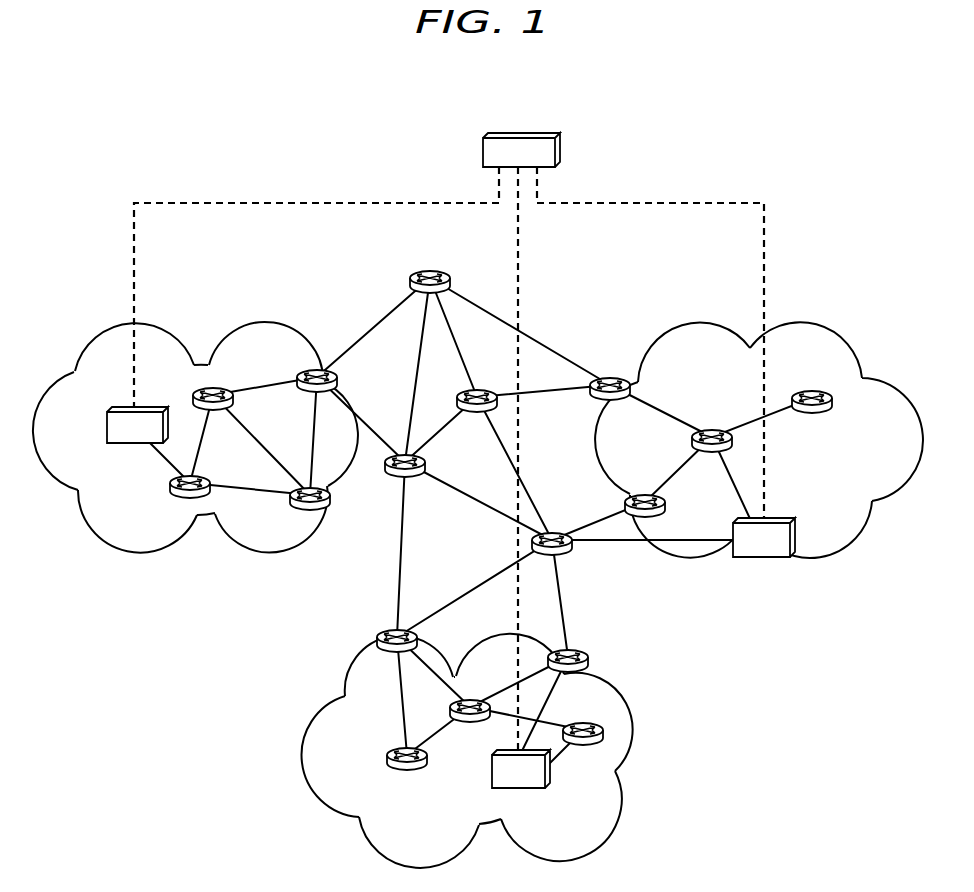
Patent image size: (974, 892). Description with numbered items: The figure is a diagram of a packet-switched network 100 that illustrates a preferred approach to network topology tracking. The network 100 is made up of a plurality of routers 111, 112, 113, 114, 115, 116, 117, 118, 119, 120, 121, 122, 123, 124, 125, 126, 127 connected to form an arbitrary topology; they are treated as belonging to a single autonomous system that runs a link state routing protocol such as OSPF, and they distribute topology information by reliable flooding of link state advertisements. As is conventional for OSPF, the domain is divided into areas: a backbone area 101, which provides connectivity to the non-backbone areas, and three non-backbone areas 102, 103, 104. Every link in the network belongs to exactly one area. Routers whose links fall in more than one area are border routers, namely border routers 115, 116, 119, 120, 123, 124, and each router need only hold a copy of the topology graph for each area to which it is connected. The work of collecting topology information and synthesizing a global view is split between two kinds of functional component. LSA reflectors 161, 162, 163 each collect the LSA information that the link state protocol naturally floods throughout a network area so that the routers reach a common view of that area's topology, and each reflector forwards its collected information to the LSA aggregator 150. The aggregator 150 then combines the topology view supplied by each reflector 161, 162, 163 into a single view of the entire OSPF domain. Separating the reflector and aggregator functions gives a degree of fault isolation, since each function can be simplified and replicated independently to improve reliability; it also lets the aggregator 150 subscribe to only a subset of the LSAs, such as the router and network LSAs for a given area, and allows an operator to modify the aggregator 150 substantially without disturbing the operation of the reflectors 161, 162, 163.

The packet-switched network 100 is at (375, 150).
The backbone area 101 is at (525, 467).
The non-backbone area 102 is at (90, 357).
The non-backbone area 103 is at (866, 362).
The non-backbone area 104 is at (313, 719).
The router 111 is at (429, 271).
The router 112 is at (463, 390).
The router 113 is at (392, 480).
The router 114 is at (569, 533).
The border router 115 is at (323, 369).
The border router 116 is at (320, 504).
The router 117 is at (223, 386).
The router 118 is at (205, 506).
The border router 119 is at (618, 378).
The border router 120 is at (648, 495).
The router 121 is at (718, 430).
The router 122 is at (818, 391).
The border router 123 is at (382, 632).
The border router 124 is at (588, 657).
The router 125 is at (470, 697).
The router 126 is at (408, 766).
The router 127 is at (583, 742).
The LSA aggregator 150 is at (525, 132).
The LSA reflector 161 is at (105, 428).
The LSA reflector 162 is at (757, 558).
The LSA reflector 163 is at (515, 789).